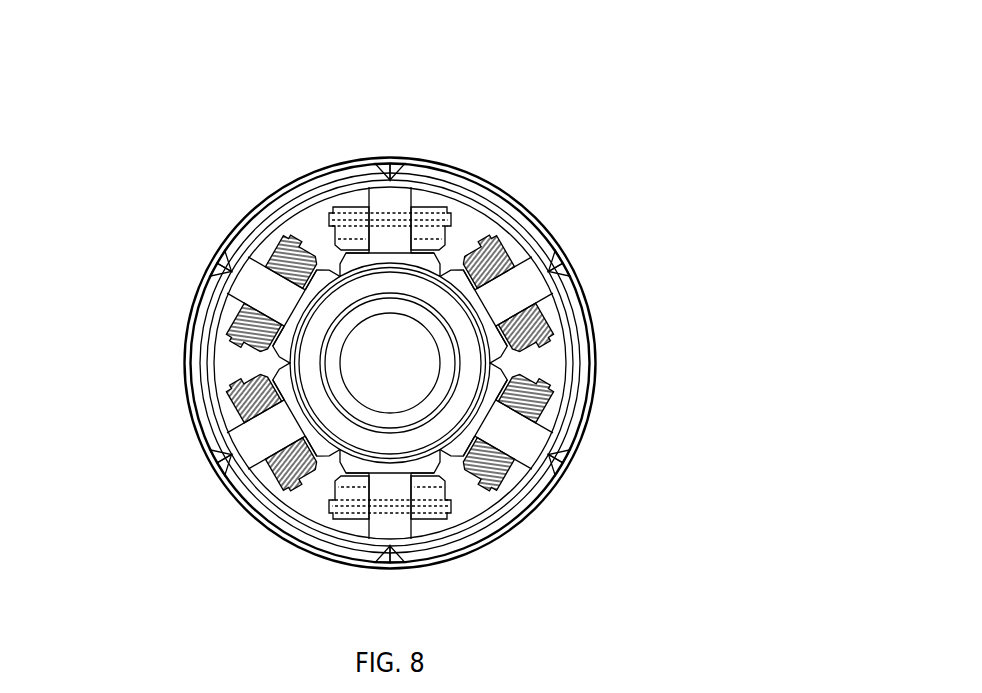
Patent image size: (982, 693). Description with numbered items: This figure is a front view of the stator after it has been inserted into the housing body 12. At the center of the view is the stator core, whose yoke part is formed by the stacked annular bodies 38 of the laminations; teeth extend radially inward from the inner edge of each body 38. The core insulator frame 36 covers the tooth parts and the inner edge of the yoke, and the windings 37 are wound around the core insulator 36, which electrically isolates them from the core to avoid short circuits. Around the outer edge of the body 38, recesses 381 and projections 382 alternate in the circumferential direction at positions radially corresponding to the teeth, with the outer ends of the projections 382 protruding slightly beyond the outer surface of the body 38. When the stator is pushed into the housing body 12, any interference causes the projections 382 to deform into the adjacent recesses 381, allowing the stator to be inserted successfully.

The housing body 12 is at (293, 185).
The core insulator frame 36 is at (520, 240).
The windings 37 is at (248, 268).
The annular body 38 is at (502, 212).
The recesses 381 is at (372, 167).
The projections 382 is at (403, 166).